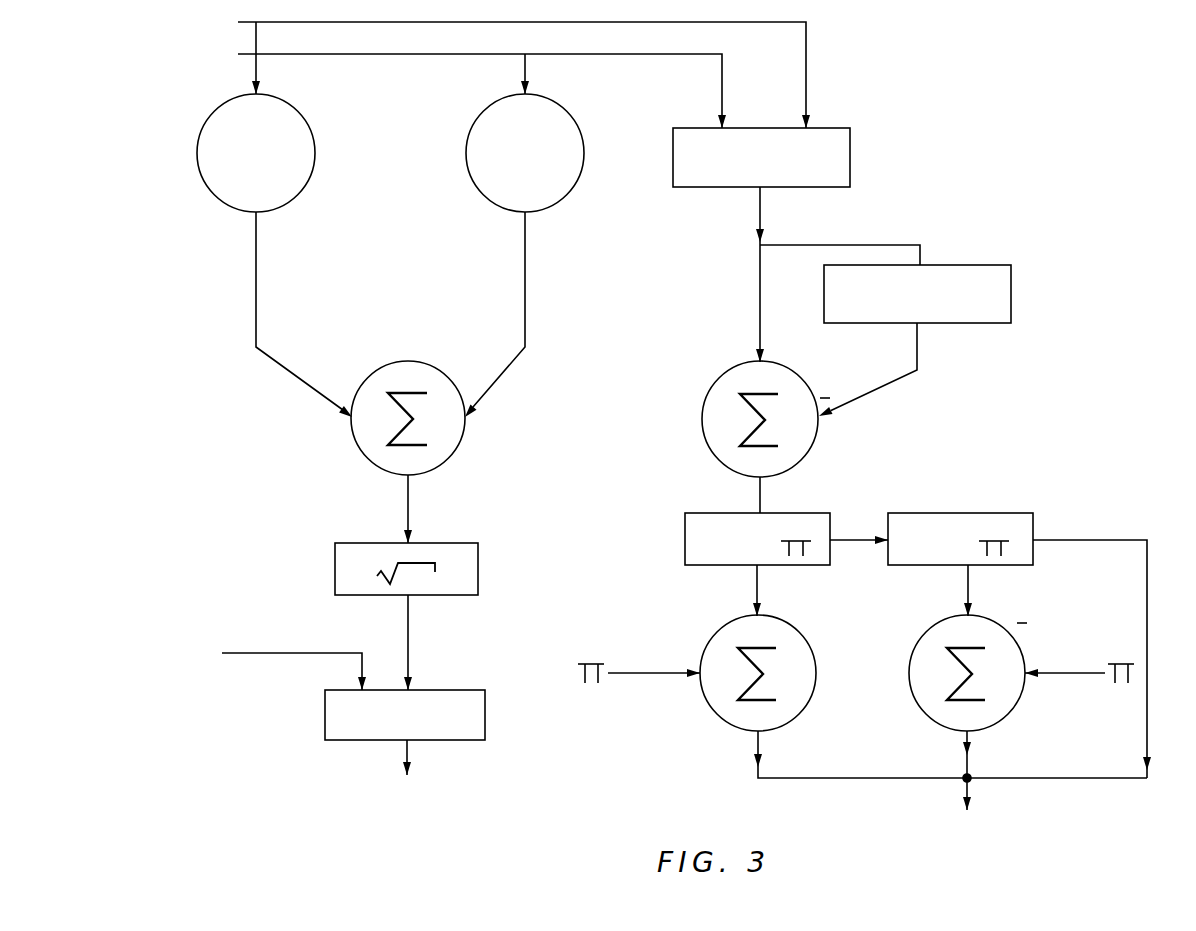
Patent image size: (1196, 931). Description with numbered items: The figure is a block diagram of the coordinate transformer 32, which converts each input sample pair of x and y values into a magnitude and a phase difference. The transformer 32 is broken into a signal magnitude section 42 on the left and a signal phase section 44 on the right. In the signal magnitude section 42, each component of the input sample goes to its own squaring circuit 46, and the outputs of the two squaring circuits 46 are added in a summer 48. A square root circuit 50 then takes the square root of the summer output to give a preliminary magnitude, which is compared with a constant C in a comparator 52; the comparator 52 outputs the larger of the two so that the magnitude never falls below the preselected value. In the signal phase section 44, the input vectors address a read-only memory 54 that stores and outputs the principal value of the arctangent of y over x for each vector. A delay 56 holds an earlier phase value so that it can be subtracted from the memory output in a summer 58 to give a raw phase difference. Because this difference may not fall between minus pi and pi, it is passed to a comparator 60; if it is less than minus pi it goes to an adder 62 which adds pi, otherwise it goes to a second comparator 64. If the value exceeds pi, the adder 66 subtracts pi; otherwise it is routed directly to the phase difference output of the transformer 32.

The coordinate transformer 32 is at (1070, 196).
The signal magnitude section 42 is at (559, 320).
The signal phase section 44 is at (702, 318).
The squaring circuit 46 is at (298, 196).
The summer 48 is at (351, 442).
The square root circuit 50 is at (478, 568).
The comparator 52 is at (485, 712).
The read-only memory 54 is at (850, 150).
The delay 56 is at (1011, 295).
The summer 58 is at (702, 419).
The comparator 60 is at (707, 565).
The adder 62 is at (710, 712).
The second comparator 64 is at (1003, 565).
The adder 66 is at (920, 712).